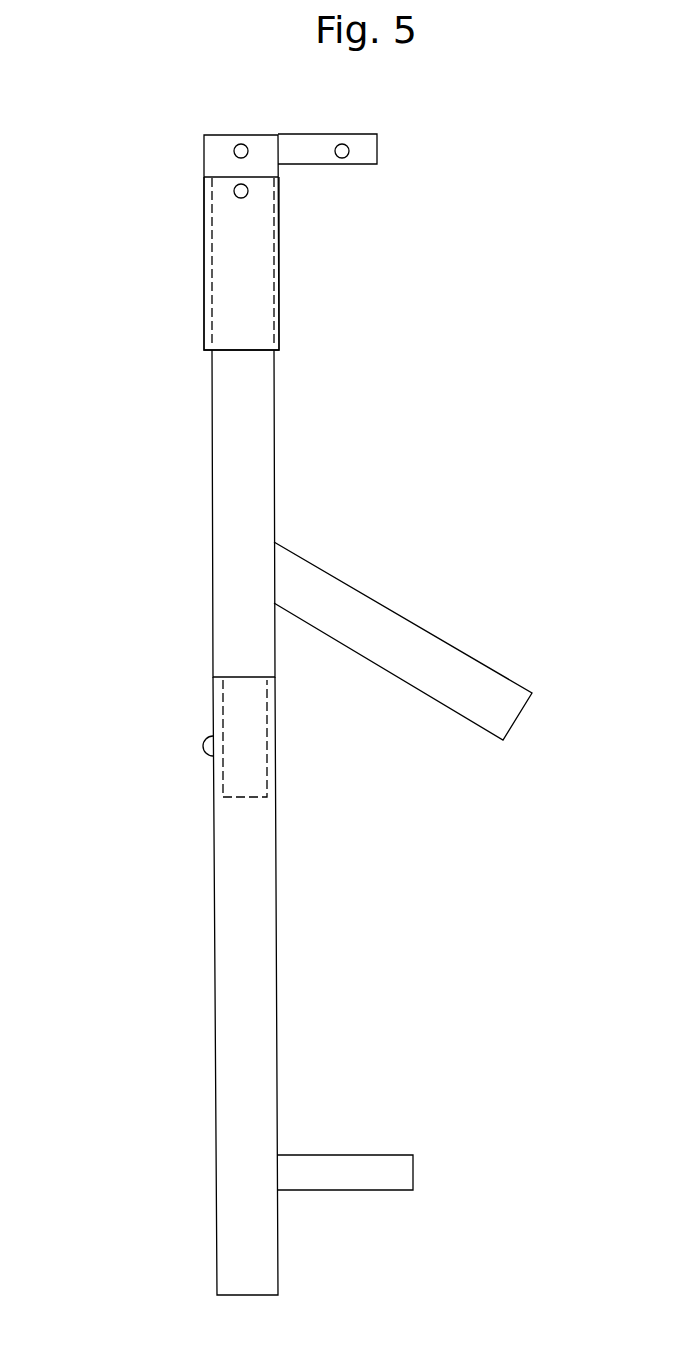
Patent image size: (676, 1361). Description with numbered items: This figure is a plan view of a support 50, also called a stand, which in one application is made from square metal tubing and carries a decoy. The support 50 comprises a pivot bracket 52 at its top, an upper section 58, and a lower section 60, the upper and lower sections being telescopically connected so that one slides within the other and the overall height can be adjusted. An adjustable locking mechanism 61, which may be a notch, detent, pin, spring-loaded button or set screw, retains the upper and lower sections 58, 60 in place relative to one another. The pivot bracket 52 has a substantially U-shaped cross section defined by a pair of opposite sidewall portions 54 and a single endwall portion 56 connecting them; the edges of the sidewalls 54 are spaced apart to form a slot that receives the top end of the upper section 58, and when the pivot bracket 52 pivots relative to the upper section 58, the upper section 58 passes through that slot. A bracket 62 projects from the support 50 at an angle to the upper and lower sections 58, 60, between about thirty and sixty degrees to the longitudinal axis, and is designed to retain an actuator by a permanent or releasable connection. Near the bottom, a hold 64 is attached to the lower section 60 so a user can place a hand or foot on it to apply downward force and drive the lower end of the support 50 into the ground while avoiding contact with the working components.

The support 50 is at (117, 437).
The pivot bracket 52 is at (205, 229).
The sidewall portions 54 is at (262, 304).
The endwall portion 56 is at (279, 235).
The upper section 58 is at (230, 492).
The lower section 60 is at (268, 976).
The locking mechanism 61 is at (204, 746).
The bracket 62 is at (437, 652).
The hold 64 is at (405, 1173).